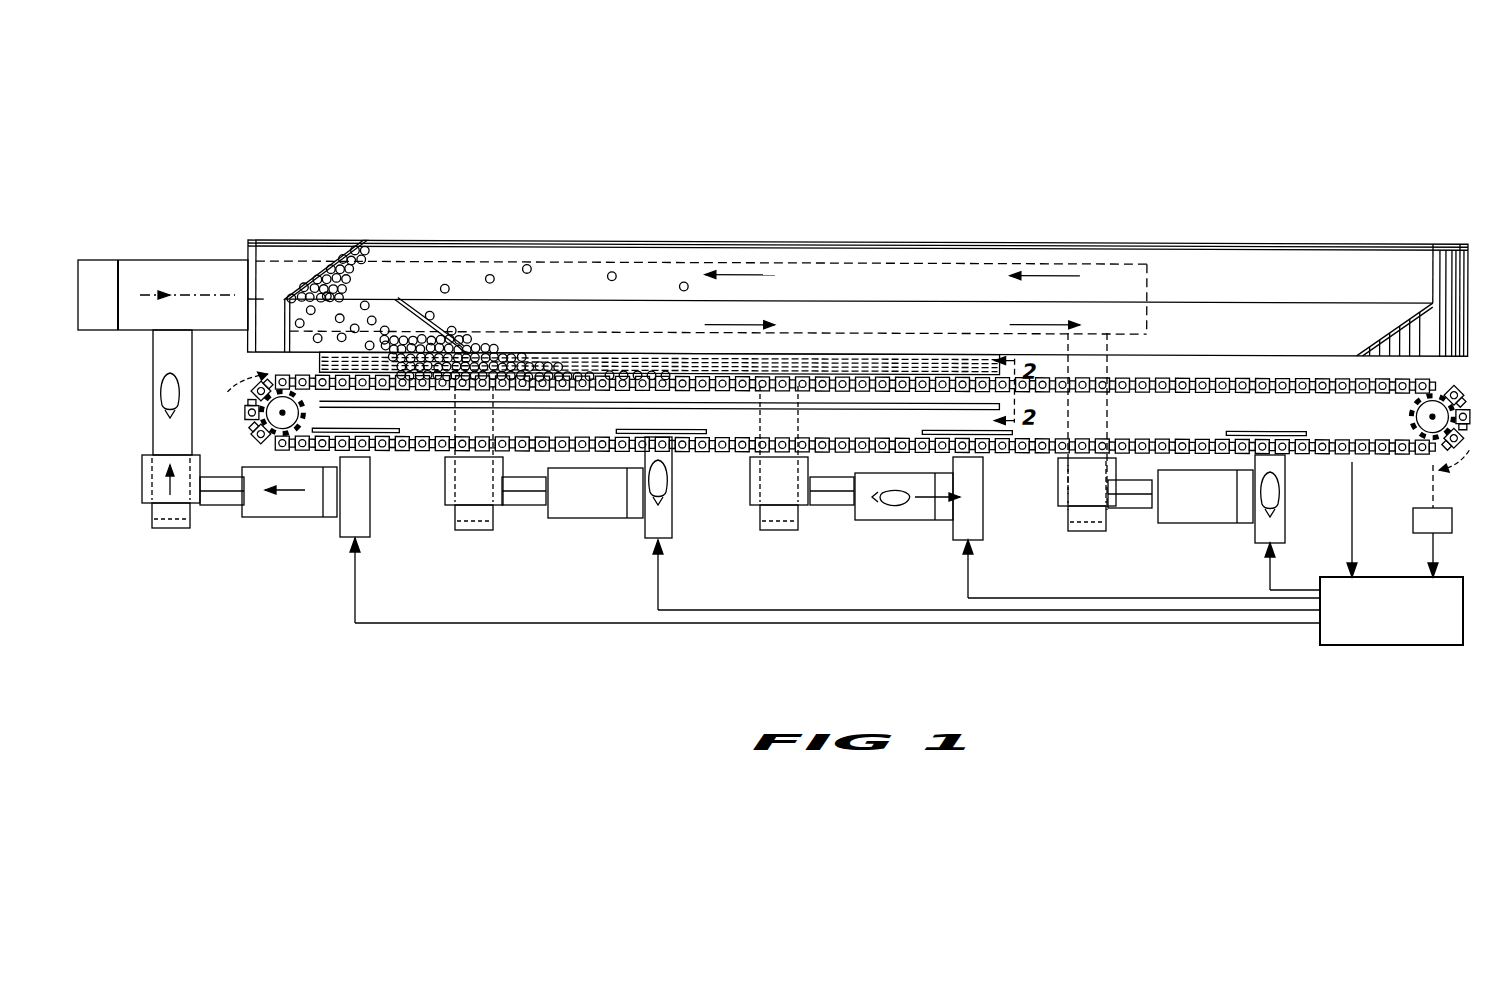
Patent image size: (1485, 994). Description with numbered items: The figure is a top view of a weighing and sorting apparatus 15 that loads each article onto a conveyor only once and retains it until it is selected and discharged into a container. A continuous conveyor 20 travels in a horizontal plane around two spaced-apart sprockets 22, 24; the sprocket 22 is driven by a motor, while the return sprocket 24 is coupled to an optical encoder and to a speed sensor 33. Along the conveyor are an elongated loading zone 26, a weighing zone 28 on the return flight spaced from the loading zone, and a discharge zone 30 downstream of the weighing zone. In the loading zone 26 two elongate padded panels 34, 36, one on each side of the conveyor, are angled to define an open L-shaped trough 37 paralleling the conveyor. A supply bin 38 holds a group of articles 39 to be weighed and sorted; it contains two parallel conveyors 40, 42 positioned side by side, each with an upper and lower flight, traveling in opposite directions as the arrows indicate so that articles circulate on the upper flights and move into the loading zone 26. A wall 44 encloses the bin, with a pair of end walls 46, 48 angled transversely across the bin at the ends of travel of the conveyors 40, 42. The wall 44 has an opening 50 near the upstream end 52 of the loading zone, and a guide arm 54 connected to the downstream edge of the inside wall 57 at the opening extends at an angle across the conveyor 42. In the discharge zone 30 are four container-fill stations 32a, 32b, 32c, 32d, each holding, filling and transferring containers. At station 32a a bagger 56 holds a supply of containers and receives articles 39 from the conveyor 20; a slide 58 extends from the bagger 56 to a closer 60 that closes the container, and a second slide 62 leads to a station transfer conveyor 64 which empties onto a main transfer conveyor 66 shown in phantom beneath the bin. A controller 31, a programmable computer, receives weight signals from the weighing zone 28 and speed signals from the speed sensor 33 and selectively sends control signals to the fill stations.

The weighing and sorting apparatus 15 is at (888, 220).
The continuous conveyor 20 is at (262, 431).
The sprocket 22 is at (258, 403).
The sprocket 24 is at (1412, 414).
The loading zone 26 is at (375, 356).
The weighing zone 28 is at (1365, 462).
The discharge zone 30 is at (893, 647).
The controller 31 is at (1410, 646).
The container-fill station 32a is at (1267, 524).
The container-fill station 32b is at (953, 541).
The container-fill station 32c is at (645, 541).
The container-fill station 32d is at (343, 540).
The speed sensor 33 is at (1413, 520).
The padded panel 34 is at (625, 367).
The padded panel 36 is at (700, 369).
The L-shaped trough 37 is at (860, 363).
The supply bin 38 is at (1045, 238).
The articles 39 is at (403, 265).
The conveyor 40 is at (1183, 282).
The conveyor 42 is at (1180, 342).
The wall 44 is at (1287, 242).
The end wall 46 is at (340, 256).
The end wall 48 is at (1385, 330).
The opening 50 is at (384, 339).
The upstream end 52 is at (341, 448).
The guide arm 54 is at (440, 329).
The bagger 56 is at (1276, 520).
The inside wall 57 is at (555, 364).
The slide 58 is at (1208, 513).
The closer 60 is at (1143, 508).
The second slide 62 is at (1058, 480).
The station transfer conveyor 64 is at (1107, 420).
The main transfer conveyor 66 is at (160, 272).